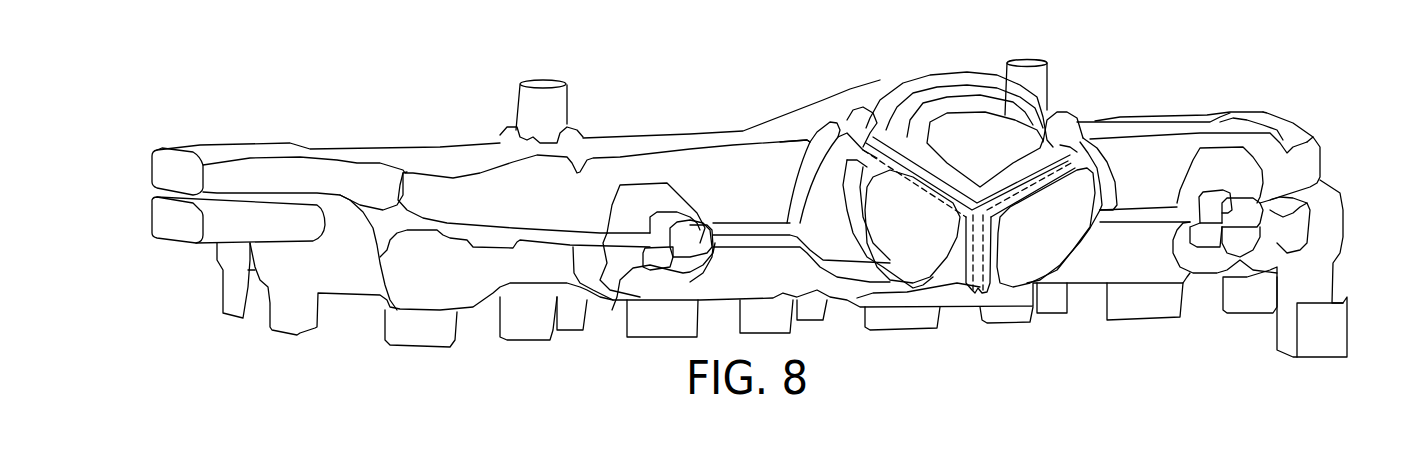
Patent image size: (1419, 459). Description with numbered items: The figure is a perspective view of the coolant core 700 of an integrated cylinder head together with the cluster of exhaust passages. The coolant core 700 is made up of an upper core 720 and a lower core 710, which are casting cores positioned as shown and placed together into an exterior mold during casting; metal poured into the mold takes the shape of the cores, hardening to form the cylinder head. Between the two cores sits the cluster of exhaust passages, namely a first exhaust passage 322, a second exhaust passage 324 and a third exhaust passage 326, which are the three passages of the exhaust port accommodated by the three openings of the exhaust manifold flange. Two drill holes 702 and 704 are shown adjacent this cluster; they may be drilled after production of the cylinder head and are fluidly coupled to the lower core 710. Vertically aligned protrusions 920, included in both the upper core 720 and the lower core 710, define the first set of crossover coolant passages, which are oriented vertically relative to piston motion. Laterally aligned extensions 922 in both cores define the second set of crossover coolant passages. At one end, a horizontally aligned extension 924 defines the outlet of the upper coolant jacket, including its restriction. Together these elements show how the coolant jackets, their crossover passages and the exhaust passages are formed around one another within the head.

The coolant core 700 is at (1297, 113).
The drill hole 702 is at (862, 125).
The drill hole 704 is at (1091, 138).
The lower core 710 is at (787, 284).
The upper core 720 is at (1178, 170).
The first exhaust passage 322 is at (935, 247).
The second exhaust passage 324 is at (1003, 152).
The third exhaust passage 326 is at (1060, 247).
The vertically aligned protrusions 920 is at (543, 82).
The laterally aligned extensions 922 is at (673, 262).
The horizontally aligned extension 924 is at (163, 168).